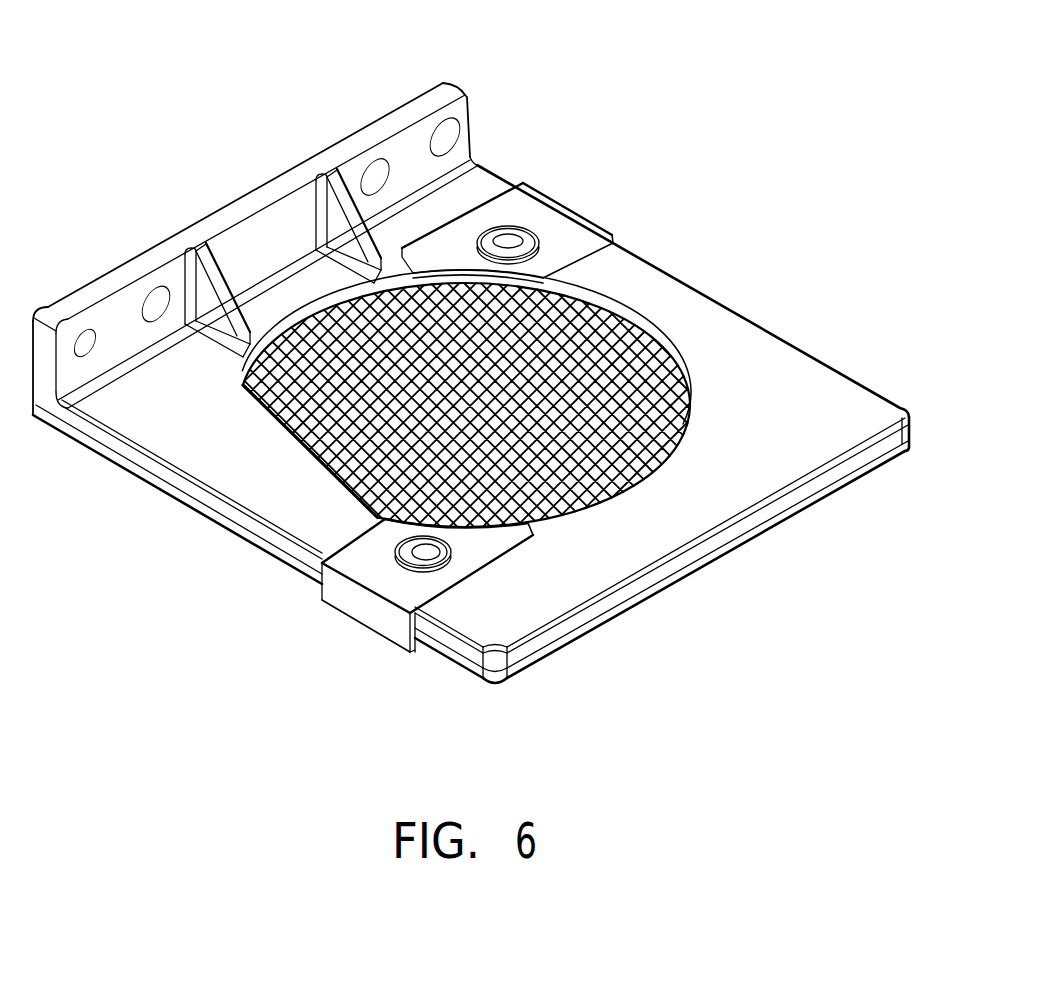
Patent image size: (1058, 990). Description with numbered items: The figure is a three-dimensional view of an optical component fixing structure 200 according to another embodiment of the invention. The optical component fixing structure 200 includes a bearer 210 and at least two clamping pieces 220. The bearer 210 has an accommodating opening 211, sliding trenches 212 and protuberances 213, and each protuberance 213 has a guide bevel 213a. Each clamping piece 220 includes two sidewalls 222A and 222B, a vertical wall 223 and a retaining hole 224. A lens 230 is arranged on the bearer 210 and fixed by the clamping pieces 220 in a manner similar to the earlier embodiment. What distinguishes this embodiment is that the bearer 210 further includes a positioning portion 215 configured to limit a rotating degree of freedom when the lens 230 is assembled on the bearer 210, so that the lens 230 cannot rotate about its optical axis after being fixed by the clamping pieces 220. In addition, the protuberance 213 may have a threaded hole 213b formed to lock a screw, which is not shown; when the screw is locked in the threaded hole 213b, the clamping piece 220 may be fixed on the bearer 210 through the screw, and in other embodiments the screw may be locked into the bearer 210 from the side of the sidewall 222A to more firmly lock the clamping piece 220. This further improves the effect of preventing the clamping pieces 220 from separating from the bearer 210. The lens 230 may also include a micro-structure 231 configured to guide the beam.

The optical component fixing structure 200 is at (176, 150).
The bearer 210 is at (832, 350).
The accommodating opening 211 is at (665, 328).
The sliding trench 212 is at (458, 213).
The protuberance 213 is at (390, 361).
The guide bevel 213a is at (572, 221).
The threaded hole 213b is at (470, 240).
The positioning portion 215 is at (312, 444).
The clamping piece 220 is at (580, 186).
The sidewall 222A is at (418, 648).
The sidewall 222B is at (510, 213).
The vertical wall 223 is at (408, 622).
The retaining hole 224 is at (530, 235).
The lens 230 is at (603, 483).
The micro-structure 231 is at (272, 396).